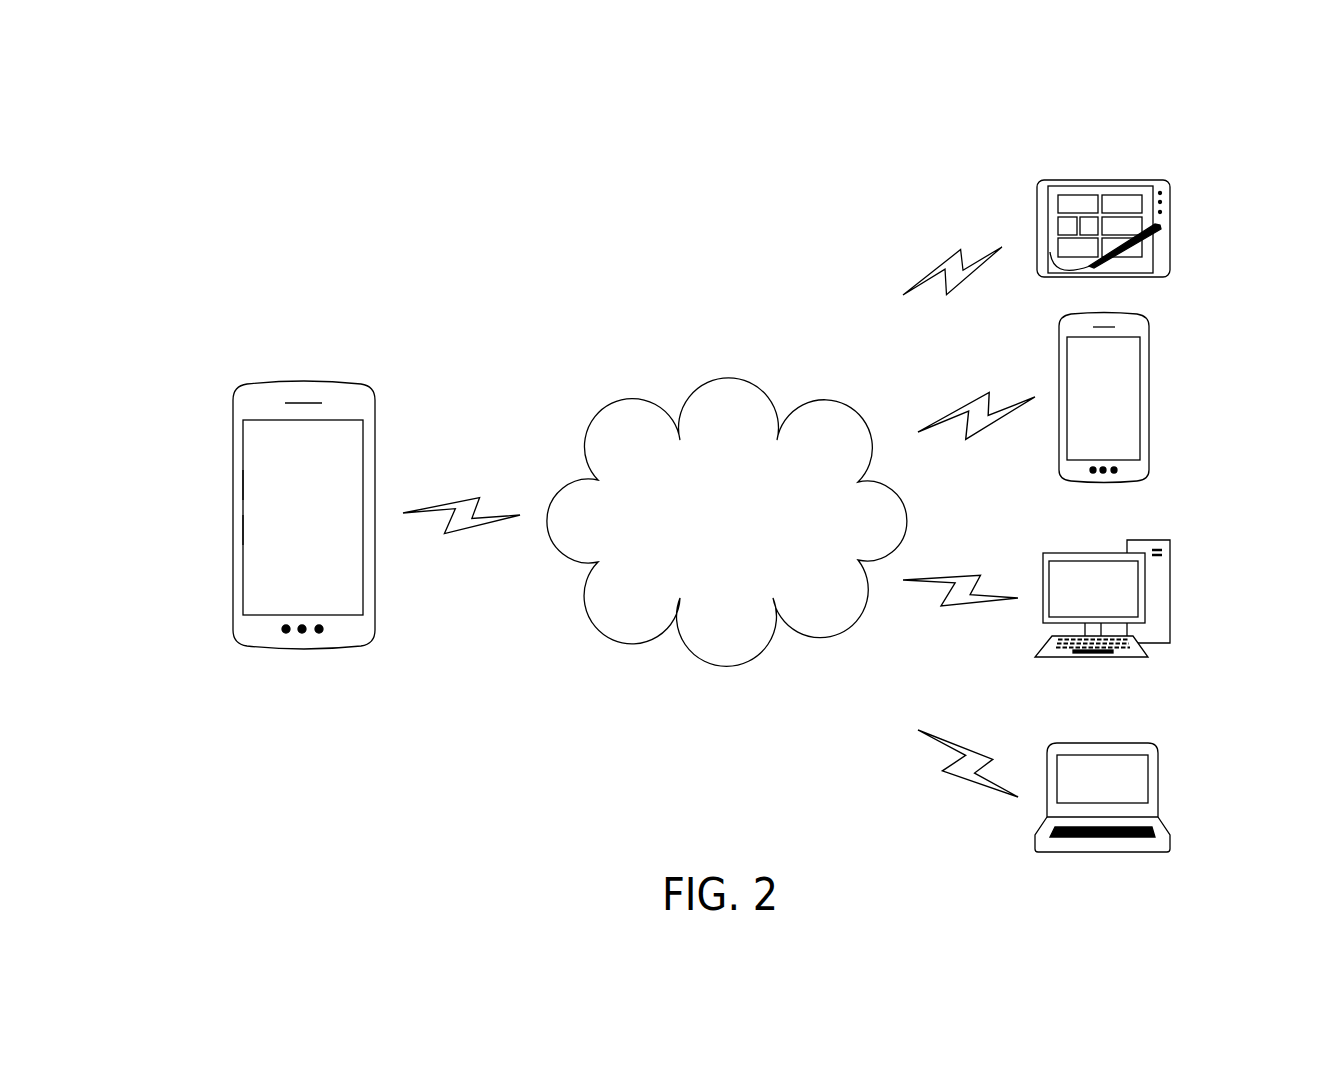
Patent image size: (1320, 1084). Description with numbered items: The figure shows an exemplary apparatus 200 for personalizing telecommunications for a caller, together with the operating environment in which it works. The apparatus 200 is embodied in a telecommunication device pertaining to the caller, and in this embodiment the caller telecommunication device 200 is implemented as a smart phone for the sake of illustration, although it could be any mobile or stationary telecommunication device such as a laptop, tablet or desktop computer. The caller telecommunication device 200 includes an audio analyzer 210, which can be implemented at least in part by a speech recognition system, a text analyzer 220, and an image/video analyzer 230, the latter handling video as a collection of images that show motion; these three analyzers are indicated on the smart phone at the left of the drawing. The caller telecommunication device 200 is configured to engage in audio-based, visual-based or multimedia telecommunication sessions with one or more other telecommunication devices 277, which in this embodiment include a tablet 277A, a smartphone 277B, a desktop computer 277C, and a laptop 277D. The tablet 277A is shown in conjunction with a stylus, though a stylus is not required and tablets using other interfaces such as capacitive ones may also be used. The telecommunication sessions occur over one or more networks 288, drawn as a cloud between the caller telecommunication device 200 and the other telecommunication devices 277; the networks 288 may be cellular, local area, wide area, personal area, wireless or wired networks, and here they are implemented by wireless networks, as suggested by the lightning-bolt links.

The apparatus 200 is at (246, 451).
The audio analyzer 210 is at (197, 435).
The text analyzer 220 is at (197, 478).
The image/video analyzer 230 is at (197, 521).
The one or more networks 288 is at (747, 528).
The one or more other telecommunication devices 277 is at (1107, 129).
The tablet 277A is at (1192, 199).
The smartphone 277B is at (1180, 354).
The desktop computer 277C is at (1195, 553).
The laptop 277D is at (1196, 755).